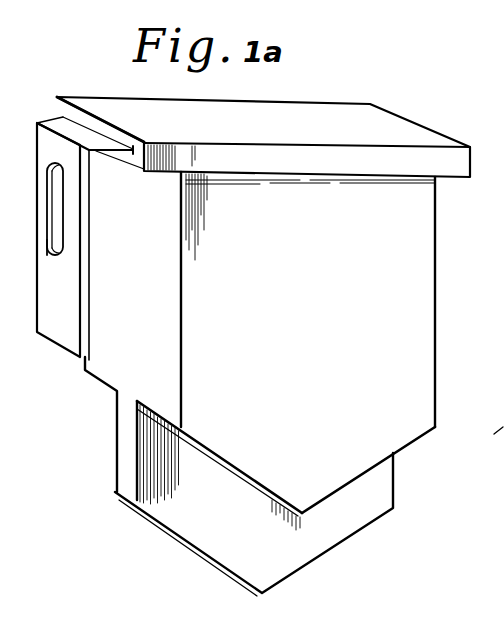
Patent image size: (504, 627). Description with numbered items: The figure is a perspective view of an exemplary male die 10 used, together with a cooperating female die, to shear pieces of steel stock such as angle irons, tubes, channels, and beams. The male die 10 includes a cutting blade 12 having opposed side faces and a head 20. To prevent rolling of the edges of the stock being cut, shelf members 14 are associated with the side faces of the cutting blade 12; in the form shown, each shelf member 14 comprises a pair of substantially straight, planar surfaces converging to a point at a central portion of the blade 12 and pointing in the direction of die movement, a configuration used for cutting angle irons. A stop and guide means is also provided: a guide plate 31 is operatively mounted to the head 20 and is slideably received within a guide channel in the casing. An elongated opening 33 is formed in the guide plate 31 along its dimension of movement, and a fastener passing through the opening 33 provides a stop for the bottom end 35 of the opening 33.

The male die 10 is at (456, 113).
The cutting blade 12 is at (217, 557).
The shelf member 14 is at (268, 497).
The head 20 is at (335, 113).
The guide plate 31 is at (43, 142).
The elongated opening 33 is at (52, 216).
The bottom end 35 is at (47, 254).